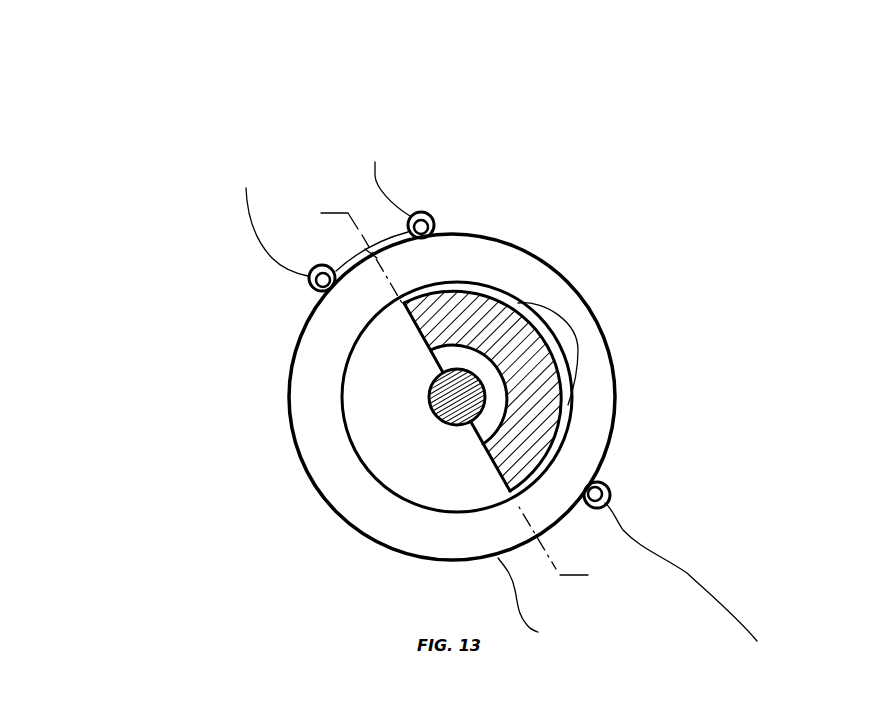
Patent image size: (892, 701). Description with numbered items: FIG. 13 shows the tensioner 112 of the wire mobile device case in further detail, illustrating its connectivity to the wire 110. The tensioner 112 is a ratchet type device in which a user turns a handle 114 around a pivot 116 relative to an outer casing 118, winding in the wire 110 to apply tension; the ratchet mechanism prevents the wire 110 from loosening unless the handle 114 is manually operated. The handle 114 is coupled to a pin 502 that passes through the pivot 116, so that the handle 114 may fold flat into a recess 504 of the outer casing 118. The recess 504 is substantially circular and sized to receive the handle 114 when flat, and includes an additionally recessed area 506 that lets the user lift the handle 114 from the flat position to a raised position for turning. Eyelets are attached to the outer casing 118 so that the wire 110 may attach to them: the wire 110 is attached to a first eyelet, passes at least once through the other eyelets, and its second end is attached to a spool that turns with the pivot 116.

The tensioner 112 is at (73, 35).
The wire 110 is at (380, 178).
The handle 114 is at (540, 416).
The pivot 116 is at (430, 406).
The outer casing 118 is at (343, 492).
The pin 502 is at (437, 367).
The recess 504 is at (356, 451).
The additionally recessed area 506 is at (602, 346).